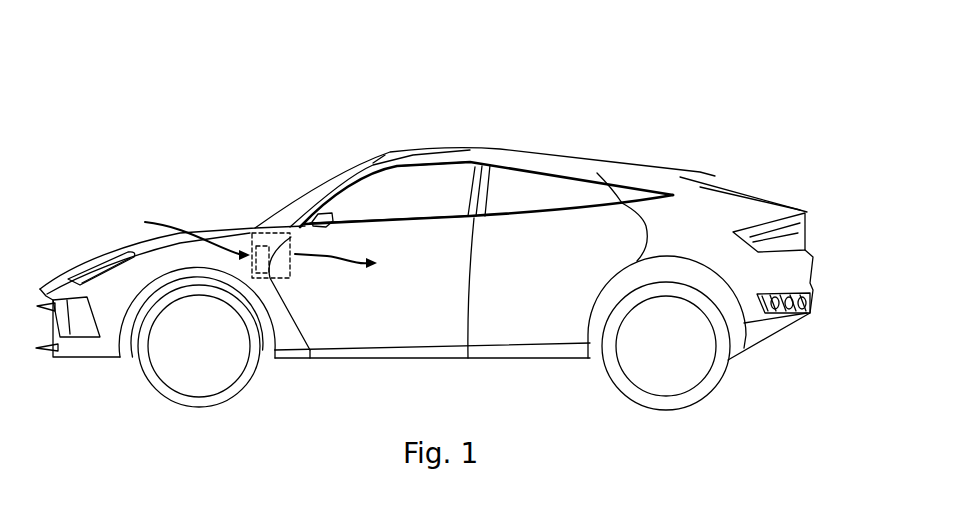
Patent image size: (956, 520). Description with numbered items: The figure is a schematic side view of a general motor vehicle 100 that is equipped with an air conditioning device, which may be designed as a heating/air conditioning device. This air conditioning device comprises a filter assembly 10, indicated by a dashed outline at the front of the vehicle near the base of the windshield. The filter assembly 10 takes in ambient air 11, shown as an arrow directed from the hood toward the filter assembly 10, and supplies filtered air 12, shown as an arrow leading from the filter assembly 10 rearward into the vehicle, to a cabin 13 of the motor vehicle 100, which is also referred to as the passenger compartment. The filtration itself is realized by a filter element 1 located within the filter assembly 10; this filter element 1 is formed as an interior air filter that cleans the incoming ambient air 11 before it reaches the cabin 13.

The motor vehicle 100 is at (694, 98).
The filter element 1 is at (263, 273).
The filter assembly 10 is at (260, 232).
The ambient air 11 is at (160, 221).
The filtered air 12 is at (337, 259).
The cabin 13 is at (423, 210).